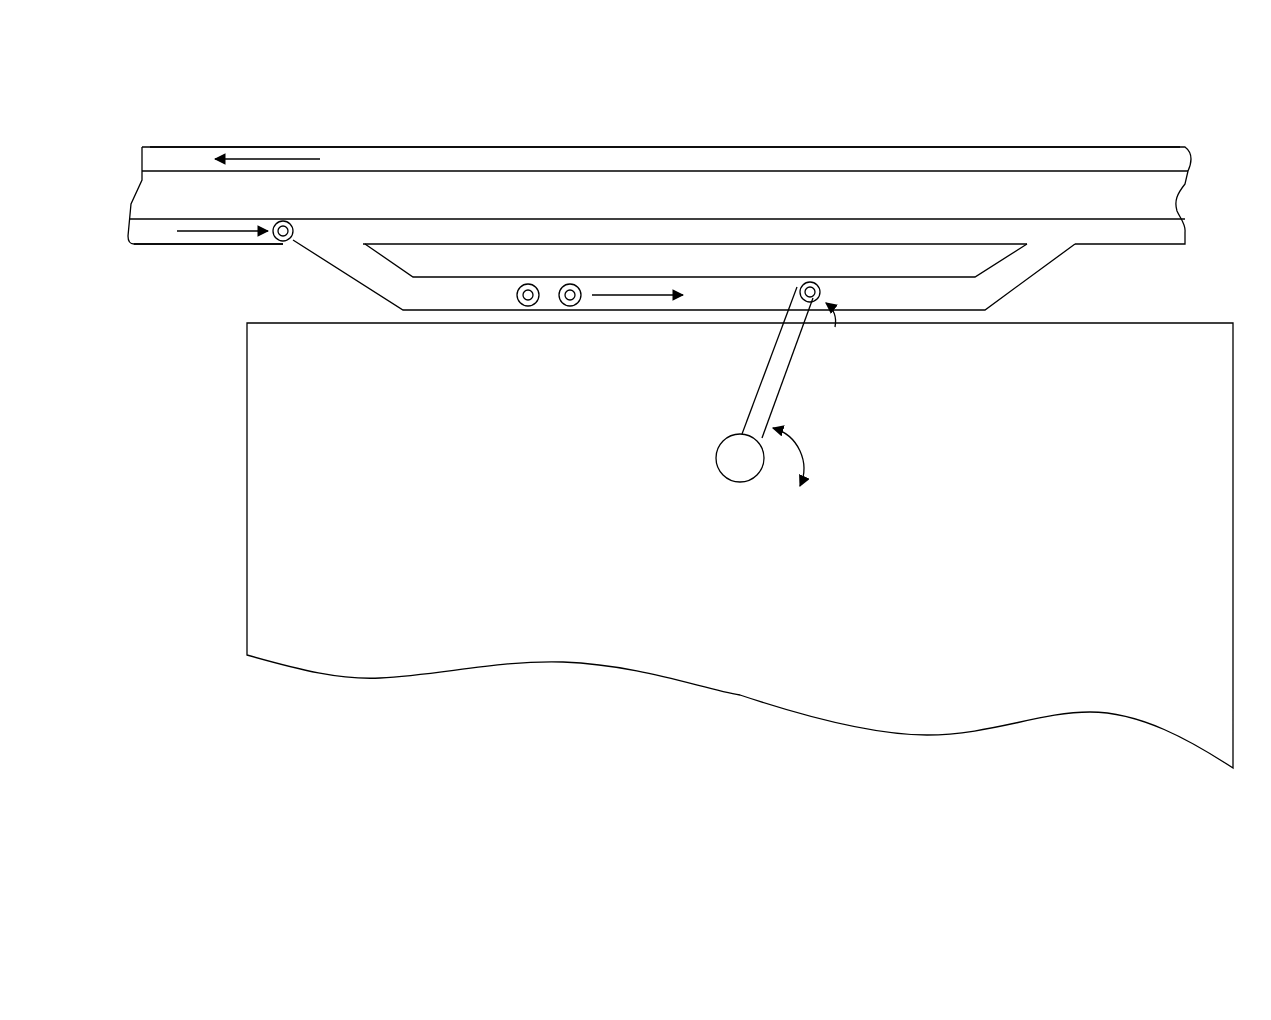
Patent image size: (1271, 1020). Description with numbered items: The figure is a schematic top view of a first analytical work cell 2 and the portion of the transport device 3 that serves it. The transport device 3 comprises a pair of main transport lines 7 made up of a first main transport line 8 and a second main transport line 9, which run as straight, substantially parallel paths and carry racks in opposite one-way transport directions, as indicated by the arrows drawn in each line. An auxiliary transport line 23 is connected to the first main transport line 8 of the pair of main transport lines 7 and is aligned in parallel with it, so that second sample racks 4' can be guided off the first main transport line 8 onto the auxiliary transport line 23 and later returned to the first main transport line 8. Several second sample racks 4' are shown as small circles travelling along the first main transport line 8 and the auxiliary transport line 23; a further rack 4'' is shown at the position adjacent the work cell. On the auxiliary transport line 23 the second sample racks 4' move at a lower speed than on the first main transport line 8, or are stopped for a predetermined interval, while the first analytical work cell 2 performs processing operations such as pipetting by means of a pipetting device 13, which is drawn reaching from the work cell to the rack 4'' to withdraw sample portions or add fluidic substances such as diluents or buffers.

The first analytical work cell 2 is at (390, 680).
The transport device 3 is at (120, 90).
The second sample rack 4' is at (416, 307).
The roller 4'' is at (822, 284).
The pair of main transport lines 7 is at (600, 144).
The first main transport line 8 is at (155, 236).
The second main transport line 9 is at (372, 152).
The pipetting device 13 is at (727, 465).
The auxiliary transport line 23 is at (457, 298).